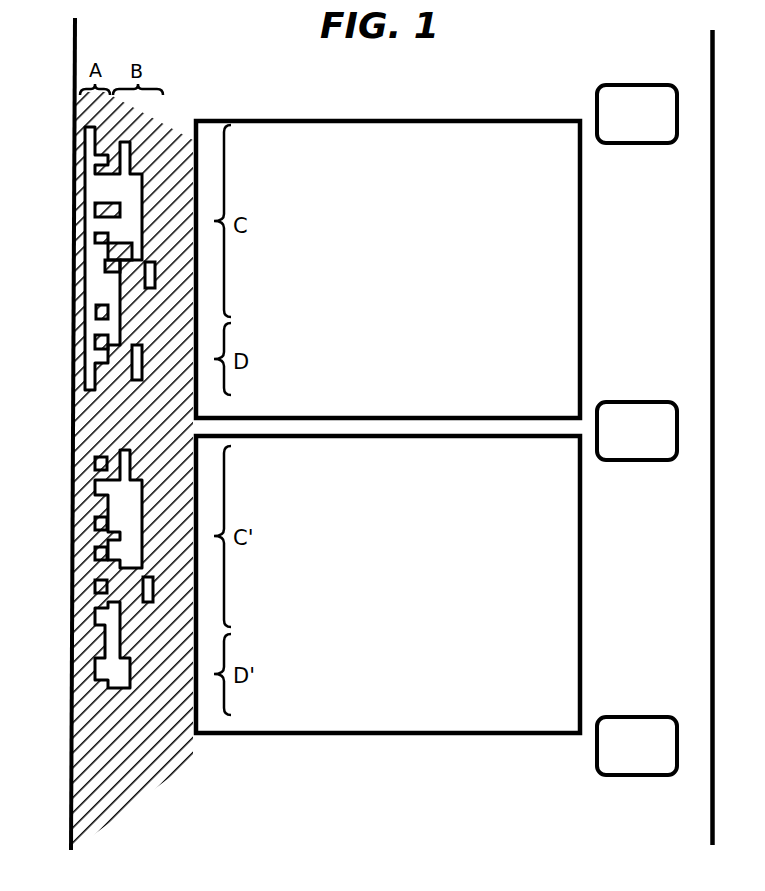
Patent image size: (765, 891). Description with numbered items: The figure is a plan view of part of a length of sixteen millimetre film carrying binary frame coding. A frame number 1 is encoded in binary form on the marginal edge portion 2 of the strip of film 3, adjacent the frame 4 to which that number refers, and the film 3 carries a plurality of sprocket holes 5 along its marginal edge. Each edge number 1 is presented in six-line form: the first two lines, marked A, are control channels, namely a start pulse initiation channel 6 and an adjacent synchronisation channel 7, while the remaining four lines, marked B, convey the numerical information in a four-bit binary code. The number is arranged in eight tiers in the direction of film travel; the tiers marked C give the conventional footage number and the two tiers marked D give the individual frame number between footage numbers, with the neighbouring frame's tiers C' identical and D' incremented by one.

The frame number 1 is at (87, 394).
The marginal edge portion 2 is at (93, 740).
The strip of film 3 is at (697, 278).
The frame 4 is at (563, 380).
The sprocket holes 5 is at (660, 447).
The start pulse initiation channel 6 is at (85, 134).
The synchronisation channel 7 is at (74, 172).